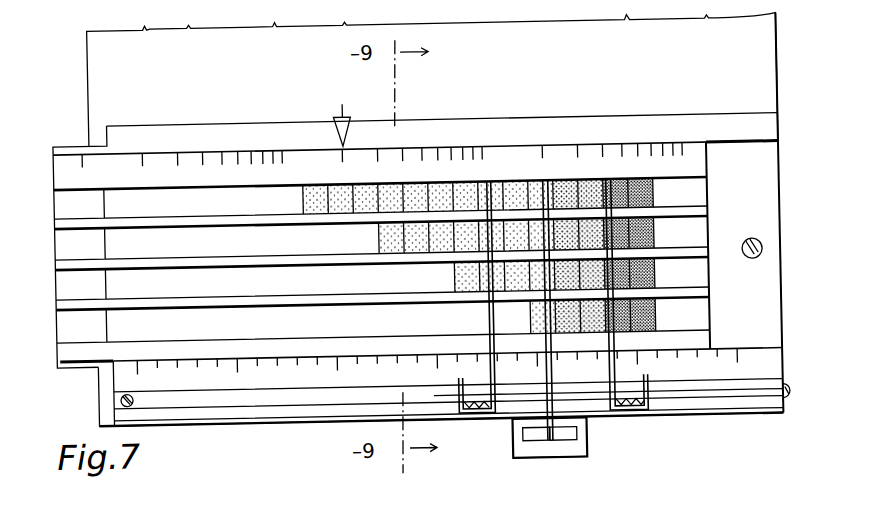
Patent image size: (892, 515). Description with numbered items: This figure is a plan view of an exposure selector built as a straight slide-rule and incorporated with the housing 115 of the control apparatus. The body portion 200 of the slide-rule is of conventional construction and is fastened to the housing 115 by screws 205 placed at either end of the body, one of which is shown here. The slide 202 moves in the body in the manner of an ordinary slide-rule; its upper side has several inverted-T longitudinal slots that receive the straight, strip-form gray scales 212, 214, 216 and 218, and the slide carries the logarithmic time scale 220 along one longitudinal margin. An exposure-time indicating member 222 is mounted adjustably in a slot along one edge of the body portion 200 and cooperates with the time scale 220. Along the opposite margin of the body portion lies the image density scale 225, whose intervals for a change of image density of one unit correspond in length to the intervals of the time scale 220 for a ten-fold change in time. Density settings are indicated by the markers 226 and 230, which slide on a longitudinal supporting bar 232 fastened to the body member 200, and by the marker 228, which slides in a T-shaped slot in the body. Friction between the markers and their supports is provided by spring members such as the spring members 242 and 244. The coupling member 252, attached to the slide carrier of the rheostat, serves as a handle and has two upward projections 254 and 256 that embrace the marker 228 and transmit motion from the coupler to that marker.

The housing 115 is at (91, 38).
The logarithmic time scale 220 is at (61, 168).
The exposure-time indicating member 222 is at (323, 114).
The gray scale 212 is at (115, 201).
The gray scale 214 is at (119, 243).
The gray scale 216 is at (118, 291).
The gray scale 218 is at (115, 326).
The slide 202 is at (708, 308).
The screw 205 is at (750, 252).
The body portion 200 is at (91, 421).
The supporting bar 232 is at (286, 404).
The marker 226 is at (458, 422).
The marker 228 is at (551, 405).
The marker 230 is at (648, 402).
The spring member 244 is at (636, 424).
The spring member 242 is at (525, 441).
The upward projection 254 is at (528, 455).
The upward projection 256 is at (563, 452).
The coupling member 252 is at (545, 470).
The image density scale 225 is at (742, 366).